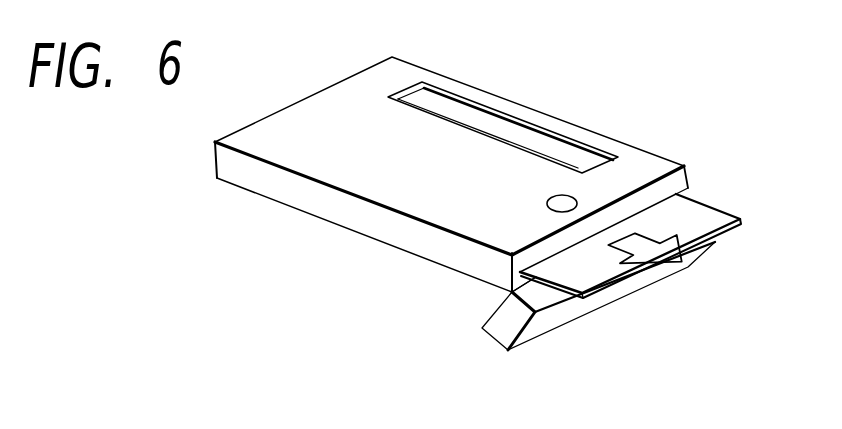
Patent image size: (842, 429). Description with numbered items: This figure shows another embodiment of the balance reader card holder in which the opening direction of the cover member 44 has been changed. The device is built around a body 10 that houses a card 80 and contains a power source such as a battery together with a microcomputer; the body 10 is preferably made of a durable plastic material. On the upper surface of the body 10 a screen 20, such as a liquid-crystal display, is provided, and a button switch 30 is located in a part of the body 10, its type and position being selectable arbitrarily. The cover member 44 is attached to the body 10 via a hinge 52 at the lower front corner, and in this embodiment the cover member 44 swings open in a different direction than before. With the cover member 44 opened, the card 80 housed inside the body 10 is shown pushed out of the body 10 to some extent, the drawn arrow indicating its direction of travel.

The body 10 is at (327, 210).
The screen 20 is at (523, 135).
The button switch 30 is at (568, 196).
The cover member 44 is at (575, 312).
The hinge 52 is at (507, 293).
The card 80 is at (705, 217).